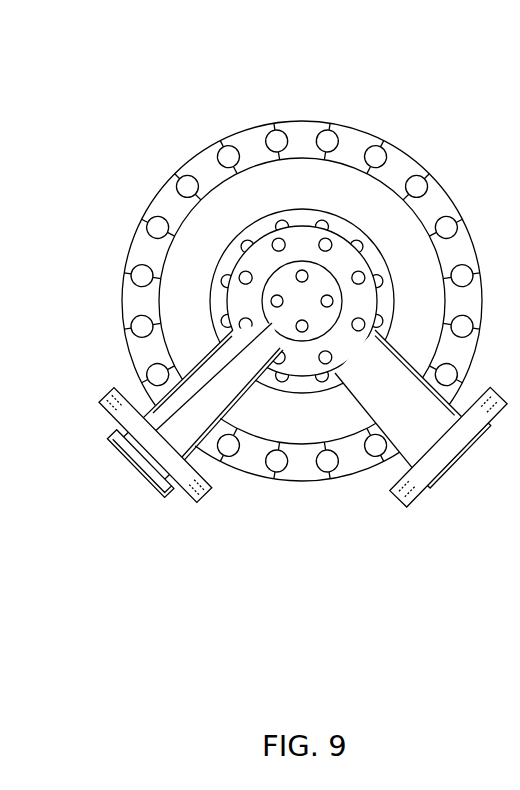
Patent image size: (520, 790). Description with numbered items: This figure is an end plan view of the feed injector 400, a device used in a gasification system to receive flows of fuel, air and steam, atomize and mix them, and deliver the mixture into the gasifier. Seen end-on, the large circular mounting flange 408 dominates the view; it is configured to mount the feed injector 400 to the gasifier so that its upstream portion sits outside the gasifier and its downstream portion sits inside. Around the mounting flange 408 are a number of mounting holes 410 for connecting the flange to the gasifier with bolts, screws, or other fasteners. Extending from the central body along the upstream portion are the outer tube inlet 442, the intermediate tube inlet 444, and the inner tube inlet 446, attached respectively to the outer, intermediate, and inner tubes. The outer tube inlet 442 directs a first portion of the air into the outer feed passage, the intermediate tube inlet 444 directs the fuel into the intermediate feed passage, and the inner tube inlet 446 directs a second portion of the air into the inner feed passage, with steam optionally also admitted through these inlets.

The feed injector 400 is at (152, 68).
The mounting flange 408 is at (210, 146).
The mounting holes 410 is at (151, 211).
The outer tube inlet 442 is at (115, 421).
The intermediate tube inlet 444 is at (436, 482).
The inner tube inlet 446 is at (129, 465).